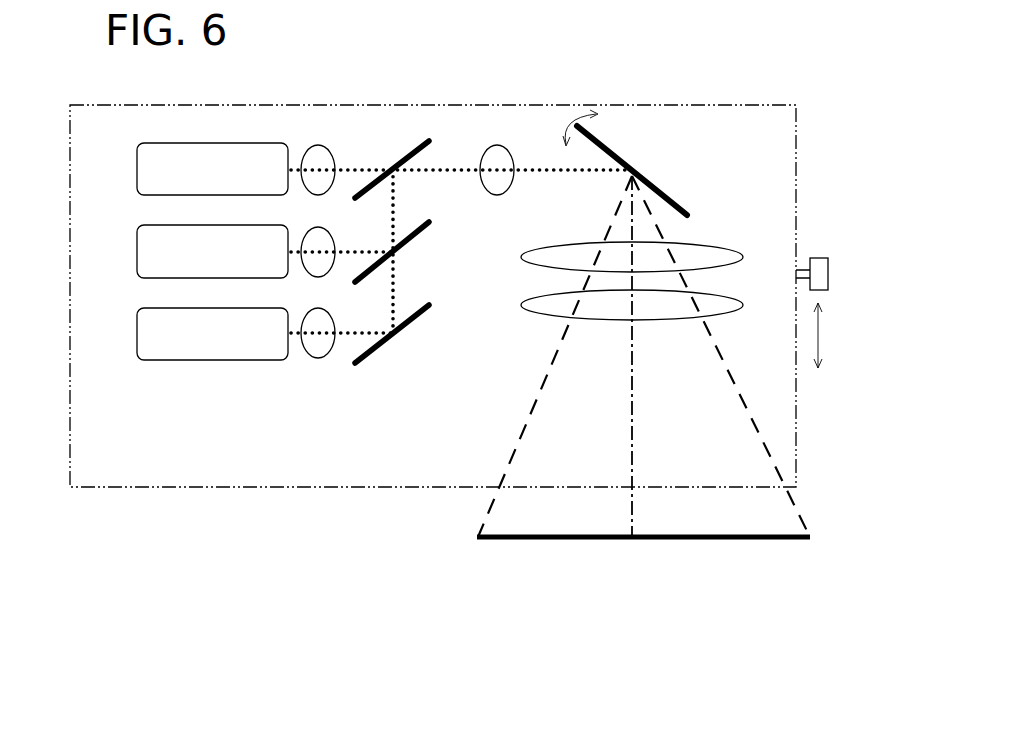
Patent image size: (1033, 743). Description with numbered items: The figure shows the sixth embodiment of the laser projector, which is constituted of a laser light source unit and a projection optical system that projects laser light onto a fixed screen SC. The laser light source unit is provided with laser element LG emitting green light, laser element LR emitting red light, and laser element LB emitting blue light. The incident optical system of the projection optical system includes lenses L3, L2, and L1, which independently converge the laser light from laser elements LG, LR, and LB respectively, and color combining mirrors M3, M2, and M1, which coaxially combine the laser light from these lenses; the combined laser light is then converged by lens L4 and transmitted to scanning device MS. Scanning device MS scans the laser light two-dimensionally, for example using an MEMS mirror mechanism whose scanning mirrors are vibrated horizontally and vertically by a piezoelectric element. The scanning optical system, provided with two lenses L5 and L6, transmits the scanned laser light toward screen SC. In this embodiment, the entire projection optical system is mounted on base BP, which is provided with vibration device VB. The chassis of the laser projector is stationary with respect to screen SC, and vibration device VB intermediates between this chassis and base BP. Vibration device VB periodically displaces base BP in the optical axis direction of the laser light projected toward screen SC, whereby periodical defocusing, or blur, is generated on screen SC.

The base BP is at (707, 106).
The laser element LG is at (137, 172).
The laser element LR is at (137, 254).
The laser element LB is at (137, 334).
The lens L1 is at (318, 320).
The lens L2 is at (318, 239).
The lens L3 is at (318, 157).
The lens L4 is at (497, 157).
The lens L5 is at (632, 247).
The lens L6 is at (632, 295).
The color combining mirror M1 is at (424, 318).
The color combining mirror M2 is at (424, 235).
The color combining mirror M3 is at (400, 162).
The scanning device MS is at (622, 162).
The vibration device VB is at (829, 270).
The screen SC is at (735, 540).